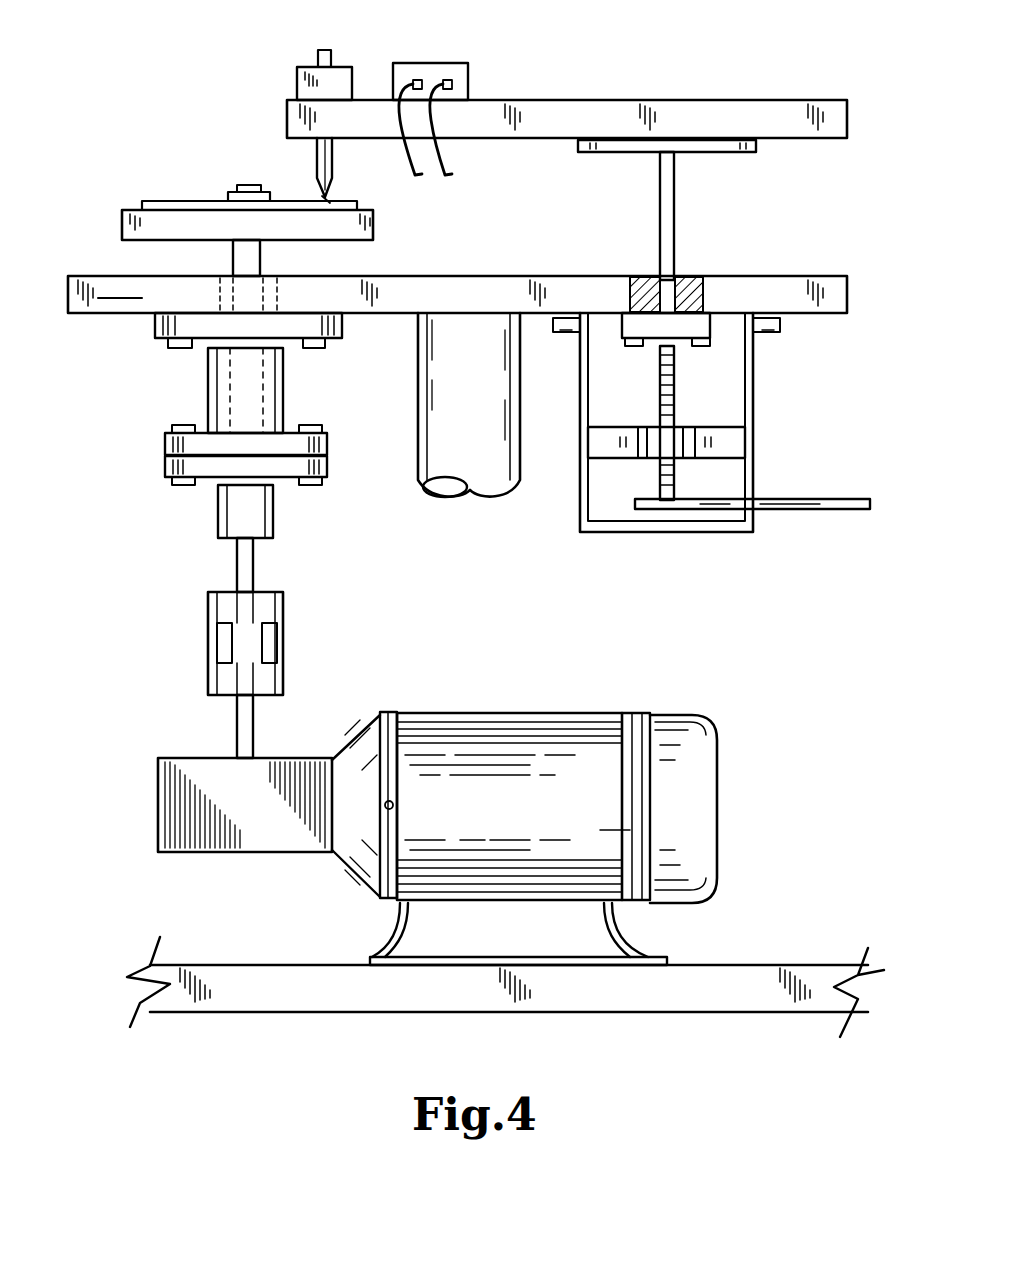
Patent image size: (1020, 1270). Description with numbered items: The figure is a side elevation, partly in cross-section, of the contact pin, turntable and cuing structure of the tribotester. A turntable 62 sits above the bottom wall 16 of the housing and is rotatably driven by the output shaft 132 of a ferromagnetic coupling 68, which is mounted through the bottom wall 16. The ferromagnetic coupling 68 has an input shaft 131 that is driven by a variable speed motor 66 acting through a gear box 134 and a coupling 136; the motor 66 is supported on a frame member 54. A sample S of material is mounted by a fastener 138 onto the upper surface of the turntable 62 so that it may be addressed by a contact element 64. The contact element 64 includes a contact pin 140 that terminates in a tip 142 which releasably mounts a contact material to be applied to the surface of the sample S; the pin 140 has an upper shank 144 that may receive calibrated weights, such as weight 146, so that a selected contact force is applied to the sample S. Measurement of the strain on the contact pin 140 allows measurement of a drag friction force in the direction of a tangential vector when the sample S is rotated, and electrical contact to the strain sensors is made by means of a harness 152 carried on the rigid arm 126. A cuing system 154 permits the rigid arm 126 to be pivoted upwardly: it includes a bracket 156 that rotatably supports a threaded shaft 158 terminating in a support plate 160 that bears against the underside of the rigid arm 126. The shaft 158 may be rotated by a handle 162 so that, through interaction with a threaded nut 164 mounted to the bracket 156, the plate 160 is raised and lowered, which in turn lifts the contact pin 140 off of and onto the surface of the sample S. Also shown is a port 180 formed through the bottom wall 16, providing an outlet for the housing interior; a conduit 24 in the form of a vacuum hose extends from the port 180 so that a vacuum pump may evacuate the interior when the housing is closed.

The contact element 64 is at (195, 88).
The rigid arm 126 is at (676, 100).
The weight 146 is at (300, 73).
The upper shank 144 is at (330, 57).
The harness 152 is at (458, 63).
The contact pin 140 is at (322, 165).
The tip 142 is at (333, 197).
The support plate 160 is at (708, 150).
The threaded shaft 158 is at (668, 210).
The port 180 is at (507, 278).
The bottom wall 16 is at (142, 300).
The turntable 62 is at (350, 236).
The sample S is at (160, 202).
The fastener 138 is at (232, 190).
The output shaft 132 is at (233, 258).
The ferromagnetic coupling 68 is at (245, 390).
The conduit 24 is at (452, 452).
The cuing system 154 is at (778, 393).
The bracket 156 is at (633, 534).
The threaded nut 164 is at (725, 440).
The handle 162 is at (787, 510).
The input shaft 131 is at (250, 570).
The coupling 136 is at (283, 643).
The gear box 134 is at (268, 830).
The variable speed motor 66 is at (543, 838).
The frame member 54 is at (726, 982).